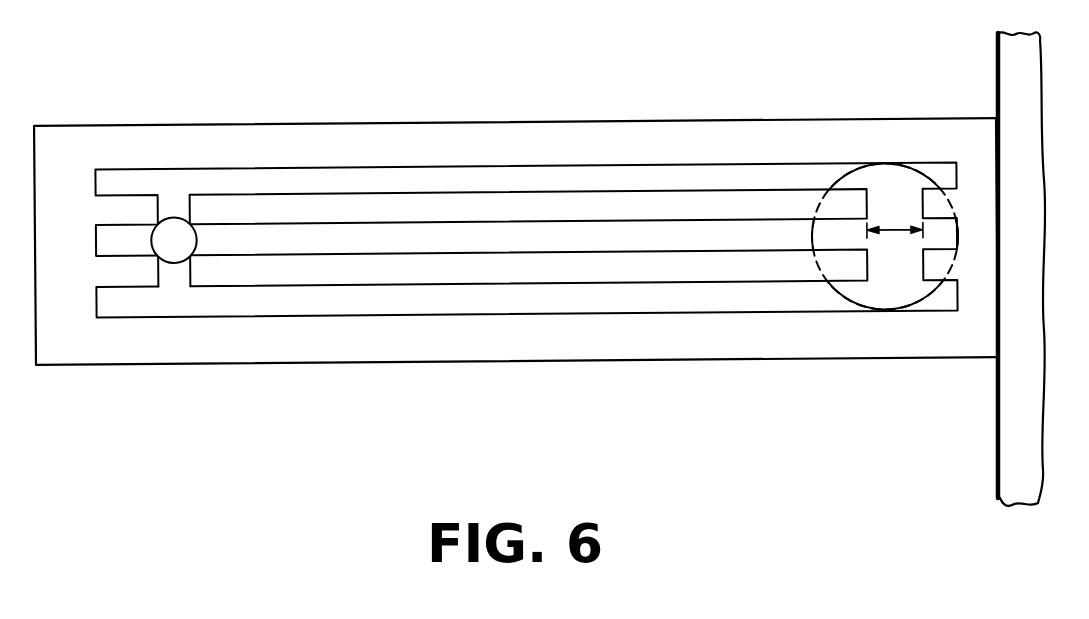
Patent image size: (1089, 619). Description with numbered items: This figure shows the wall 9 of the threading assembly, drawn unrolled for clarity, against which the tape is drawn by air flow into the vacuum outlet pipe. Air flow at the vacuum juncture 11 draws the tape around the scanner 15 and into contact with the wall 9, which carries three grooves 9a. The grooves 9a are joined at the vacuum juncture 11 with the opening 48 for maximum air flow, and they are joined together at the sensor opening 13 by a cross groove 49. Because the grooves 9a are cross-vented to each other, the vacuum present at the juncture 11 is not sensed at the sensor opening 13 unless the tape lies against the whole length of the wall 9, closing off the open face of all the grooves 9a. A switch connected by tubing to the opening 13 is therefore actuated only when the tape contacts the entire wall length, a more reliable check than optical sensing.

The wall 9 is at (645, 122).
The grooves 9a is at (577, 192).
The vacuum juncture 11 is at (889, 165).
The sensor opening 13 is at (173, 217).
The scanner 15 is at (997, 53).
The opening 48 is at (900, 237).
The cross groove 49 is at (172, 297).